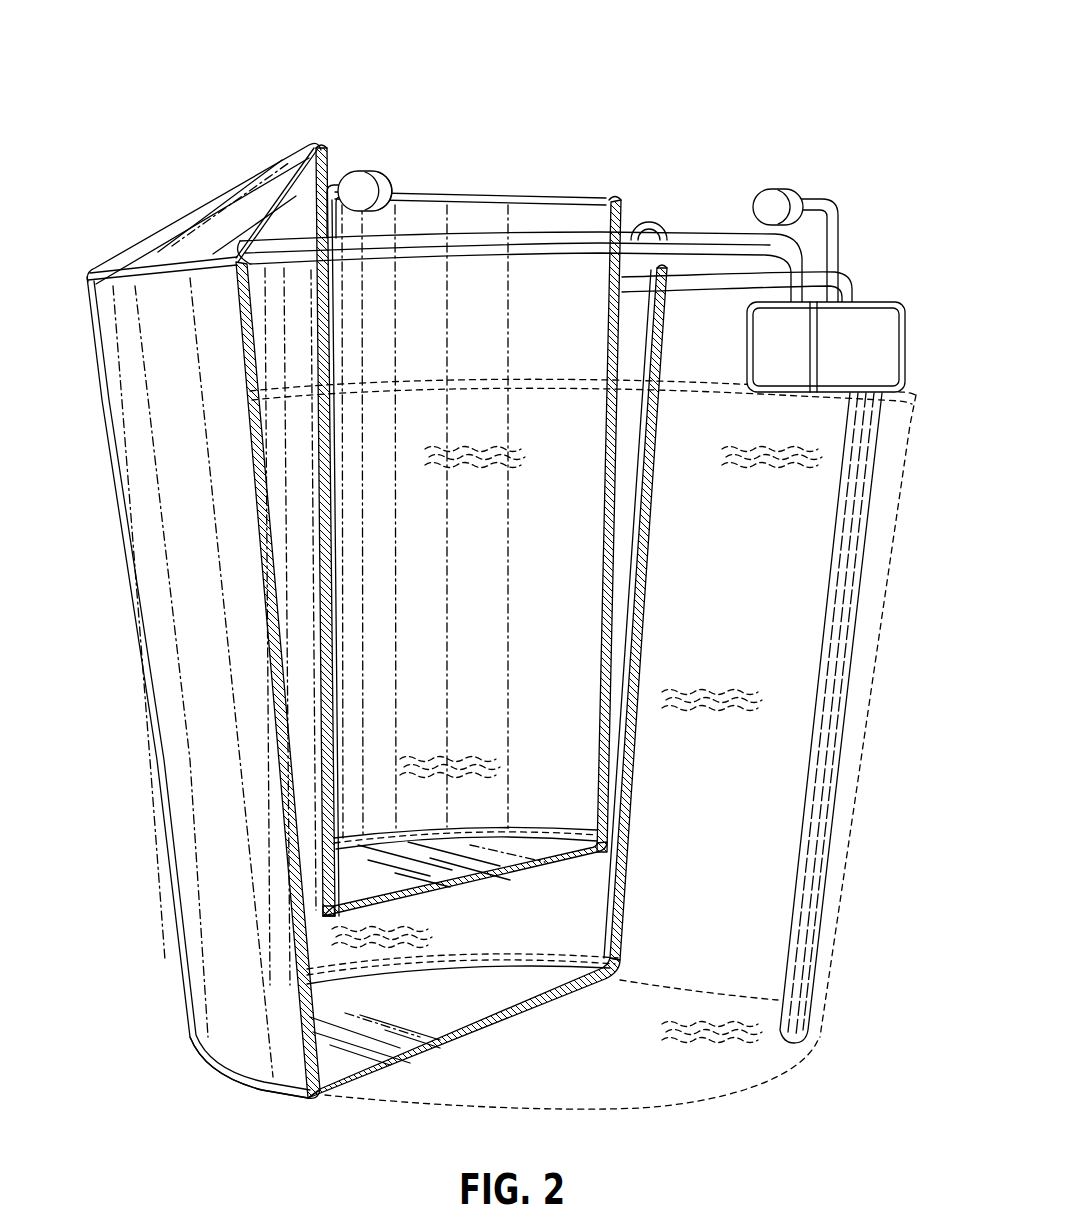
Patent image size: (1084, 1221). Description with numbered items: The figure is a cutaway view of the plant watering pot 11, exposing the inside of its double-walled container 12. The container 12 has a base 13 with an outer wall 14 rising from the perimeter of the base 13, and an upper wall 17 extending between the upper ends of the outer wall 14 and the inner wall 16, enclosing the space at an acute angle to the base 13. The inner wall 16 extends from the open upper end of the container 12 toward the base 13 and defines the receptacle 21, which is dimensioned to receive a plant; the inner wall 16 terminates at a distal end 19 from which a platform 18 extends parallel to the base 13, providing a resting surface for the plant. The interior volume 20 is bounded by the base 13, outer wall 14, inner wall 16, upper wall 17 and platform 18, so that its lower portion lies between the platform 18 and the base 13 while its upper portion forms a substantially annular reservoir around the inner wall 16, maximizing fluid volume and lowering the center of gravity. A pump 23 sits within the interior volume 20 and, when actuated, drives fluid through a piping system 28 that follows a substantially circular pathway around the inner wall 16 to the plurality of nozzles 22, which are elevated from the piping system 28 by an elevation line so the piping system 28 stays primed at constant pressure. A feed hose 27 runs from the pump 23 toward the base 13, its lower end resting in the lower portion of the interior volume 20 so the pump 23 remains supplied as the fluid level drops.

The plant watering pot 11 is at (266, 98).
The double-walled container 12 is at (353, 697).
The base 13 is at (266, 1090).
The outer wall 14 is at (188, 793).
The inner wall 16 is at (333, 430).
The upper wall 17 is at (176, 217).
The platform 18 is at (505, 853).
The distal end 19 is at (317, 892).
The interior volume 20 is at (470, 943).
The receptacle 21 is at (495, 527).
The plurality of nozzles 22 is at (780, 186).
The pump 23 is at (878, 335).
The feed hose 27 is at (826, 760).
The piping system 28 is at (713, 234).